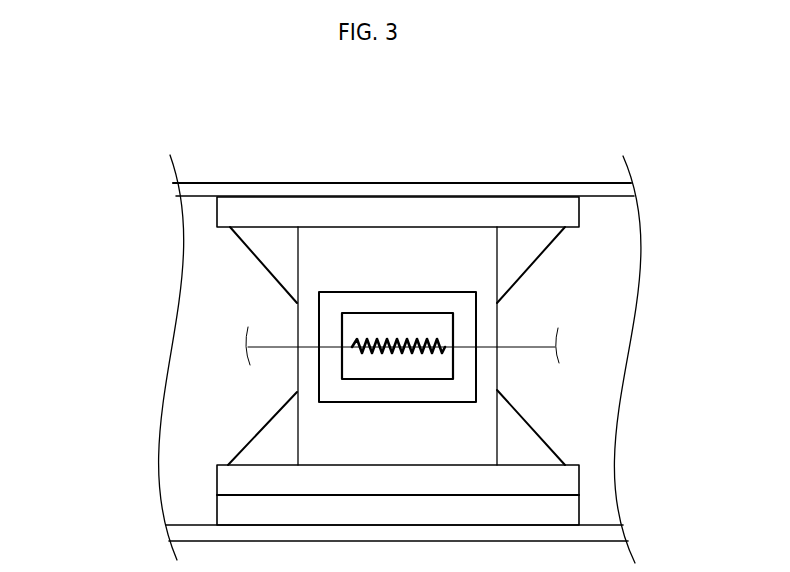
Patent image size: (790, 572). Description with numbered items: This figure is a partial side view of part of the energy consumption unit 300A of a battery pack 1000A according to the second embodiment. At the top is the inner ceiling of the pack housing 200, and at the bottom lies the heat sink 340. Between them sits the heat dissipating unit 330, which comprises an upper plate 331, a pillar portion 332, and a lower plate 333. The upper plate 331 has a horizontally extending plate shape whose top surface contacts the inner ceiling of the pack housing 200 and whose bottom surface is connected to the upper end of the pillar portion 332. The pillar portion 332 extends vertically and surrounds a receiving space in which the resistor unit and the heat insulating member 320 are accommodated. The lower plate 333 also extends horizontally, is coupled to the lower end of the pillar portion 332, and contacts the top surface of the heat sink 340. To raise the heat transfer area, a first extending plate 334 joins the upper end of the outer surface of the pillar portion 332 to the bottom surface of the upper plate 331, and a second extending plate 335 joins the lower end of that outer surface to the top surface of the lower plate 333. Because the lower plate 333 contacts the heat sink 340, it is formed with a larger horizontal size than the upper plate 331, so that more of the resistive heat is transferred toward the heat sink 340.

The battery pack 1000A is at (194, 143).
The pack housing 200 is at (221, 183).
The energy consumption unit 300A is at (338, 361).
The heat insulating member 320 is at (465, 321).
The heat dissipating unit 330 is at (313, 361).
The upper plate 331 is at (217, 211).
The pillar portion 332 is at (298, 317).
The lower plate 333 is at (343, 495).
The first extending plate 334 is at (260, 262).
The second extending plate 335 is at (258, 433).
The heat sink 340 is at (579, 509).